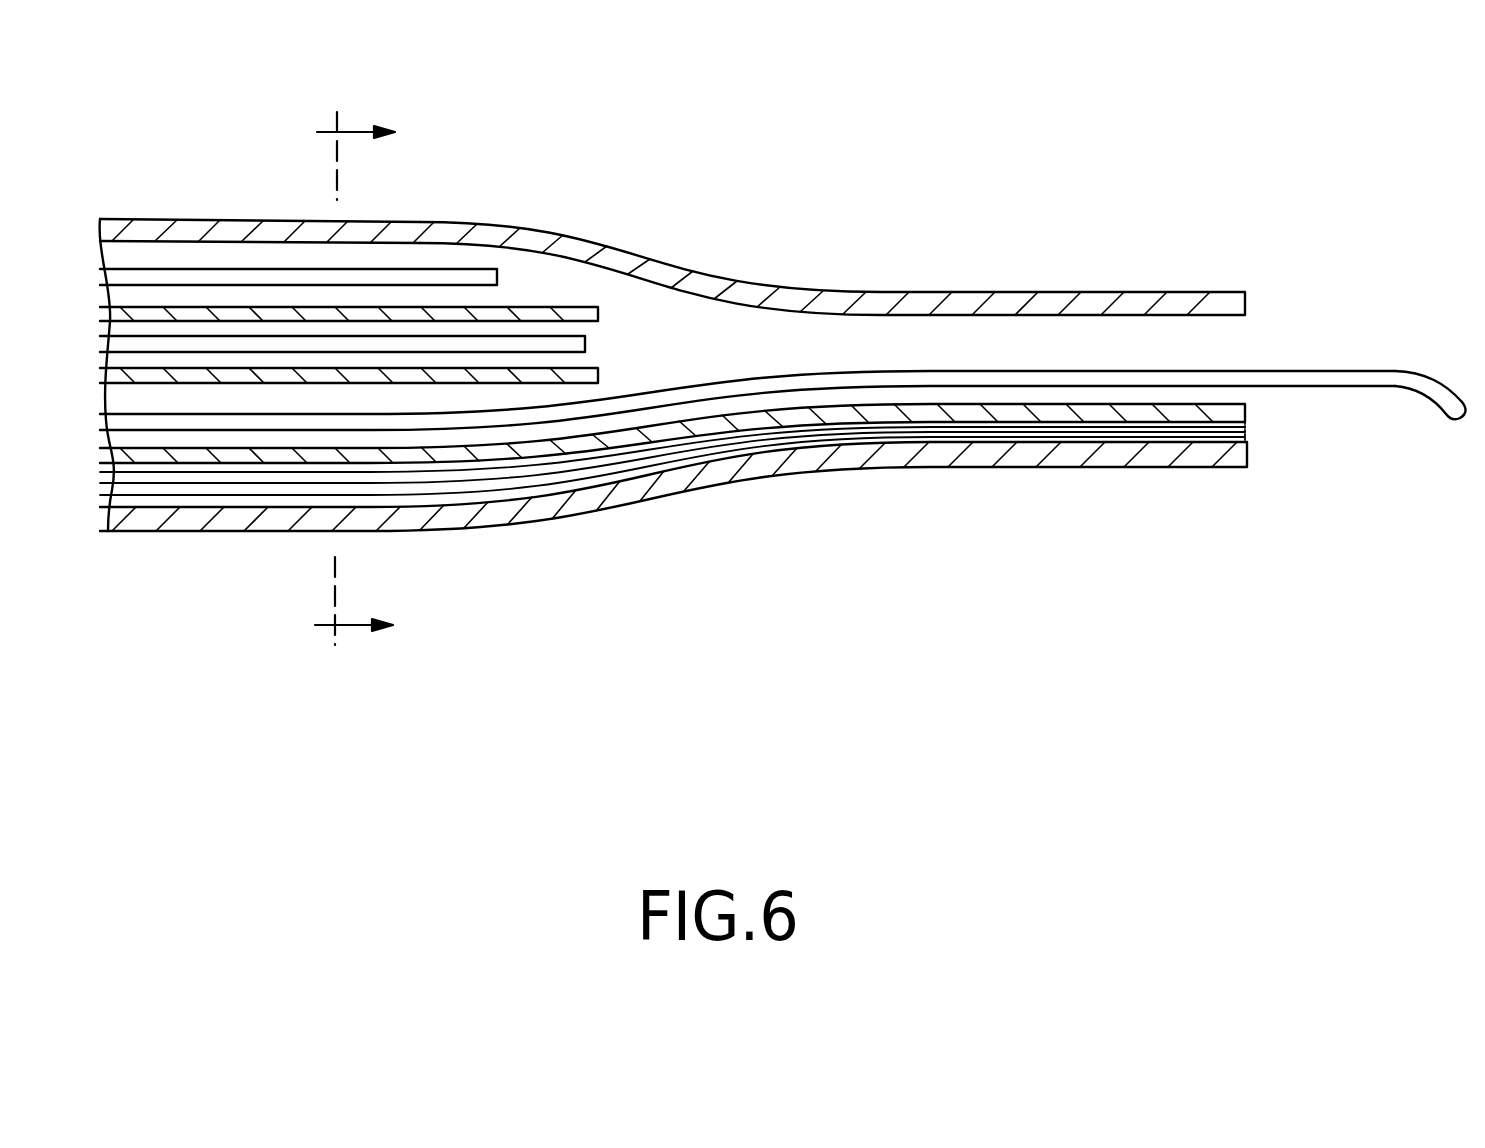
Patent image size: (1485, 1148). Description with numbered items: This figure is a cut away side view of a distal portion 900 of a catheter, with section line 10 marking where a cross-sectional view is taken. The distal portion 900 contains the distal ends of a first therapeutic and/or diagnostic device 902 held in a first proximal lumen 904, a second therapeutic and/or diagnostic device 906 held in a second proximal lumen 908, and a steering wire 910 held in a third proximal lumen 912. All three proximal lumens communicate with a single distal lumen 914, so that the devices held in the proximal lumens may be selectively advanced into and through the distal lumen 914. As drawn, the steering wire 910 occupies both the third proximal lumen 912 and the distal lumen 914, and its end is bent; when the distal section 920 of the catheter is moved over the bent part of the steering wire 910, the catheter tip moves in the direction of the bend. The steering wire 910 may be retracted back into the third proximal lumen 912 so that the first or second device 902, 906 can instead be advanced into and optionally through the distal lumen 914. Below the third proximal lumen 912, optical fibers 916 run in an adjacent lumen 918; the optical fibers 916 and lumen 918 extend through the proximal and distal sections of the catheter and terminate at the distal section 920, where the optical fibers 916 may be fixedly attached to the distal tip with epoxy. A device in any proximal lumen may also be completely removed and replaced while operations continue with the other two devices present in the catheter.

The section line 10- 10 is at (351, 381).
The distal portion 900 is at (783, 349).
The first therapeutic and/or diagnostic device 902 is at (498, 276).
The first proximal lumen 904 is at (460, 258).
The second therapeutic and/or diagnostic device 906 is at (585, 346).
The second proximal lumen 908 is at (560, 330).
The steering wire 910 is at (888, 375).
The third proximal lumen 912 is at (565, 422).
The distal lumen 914 is at (1122, 333).
The optical fibers 916 is at (1175, 432).
The lumen 918 is at (1248, 433).
The distal section 920 is at (1290, 348).